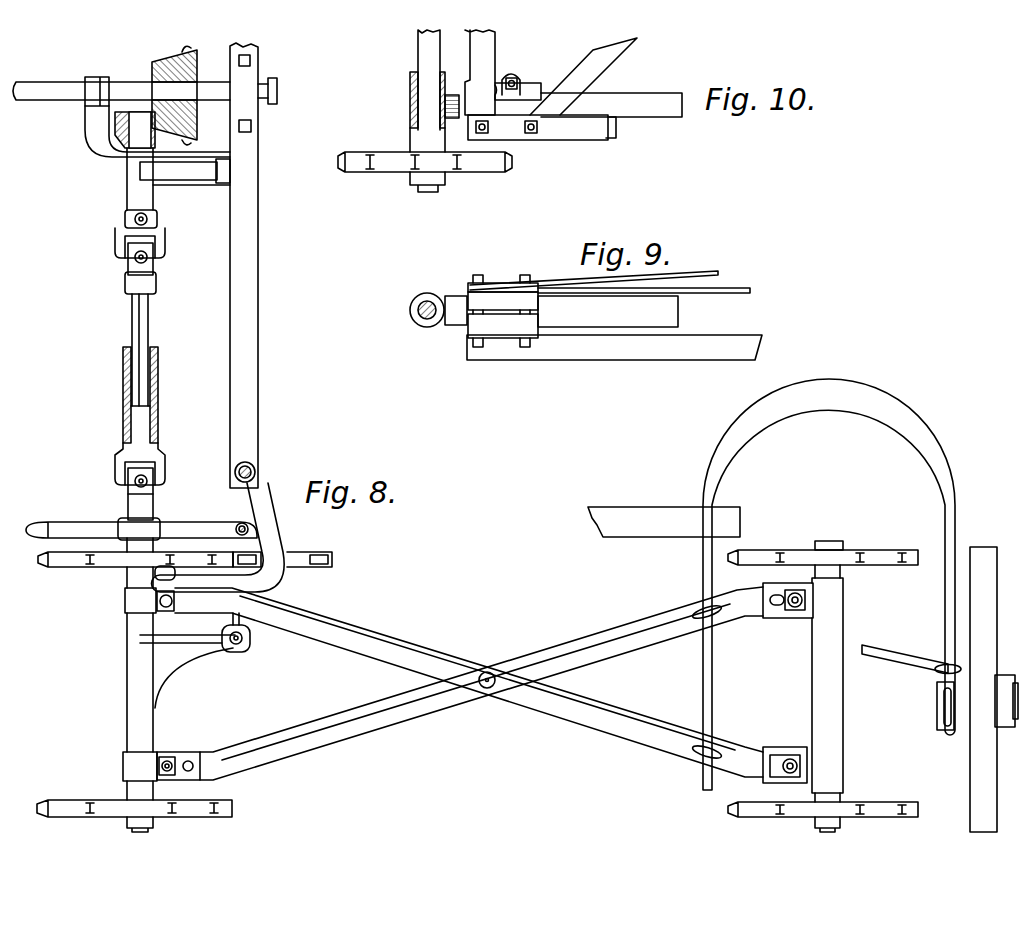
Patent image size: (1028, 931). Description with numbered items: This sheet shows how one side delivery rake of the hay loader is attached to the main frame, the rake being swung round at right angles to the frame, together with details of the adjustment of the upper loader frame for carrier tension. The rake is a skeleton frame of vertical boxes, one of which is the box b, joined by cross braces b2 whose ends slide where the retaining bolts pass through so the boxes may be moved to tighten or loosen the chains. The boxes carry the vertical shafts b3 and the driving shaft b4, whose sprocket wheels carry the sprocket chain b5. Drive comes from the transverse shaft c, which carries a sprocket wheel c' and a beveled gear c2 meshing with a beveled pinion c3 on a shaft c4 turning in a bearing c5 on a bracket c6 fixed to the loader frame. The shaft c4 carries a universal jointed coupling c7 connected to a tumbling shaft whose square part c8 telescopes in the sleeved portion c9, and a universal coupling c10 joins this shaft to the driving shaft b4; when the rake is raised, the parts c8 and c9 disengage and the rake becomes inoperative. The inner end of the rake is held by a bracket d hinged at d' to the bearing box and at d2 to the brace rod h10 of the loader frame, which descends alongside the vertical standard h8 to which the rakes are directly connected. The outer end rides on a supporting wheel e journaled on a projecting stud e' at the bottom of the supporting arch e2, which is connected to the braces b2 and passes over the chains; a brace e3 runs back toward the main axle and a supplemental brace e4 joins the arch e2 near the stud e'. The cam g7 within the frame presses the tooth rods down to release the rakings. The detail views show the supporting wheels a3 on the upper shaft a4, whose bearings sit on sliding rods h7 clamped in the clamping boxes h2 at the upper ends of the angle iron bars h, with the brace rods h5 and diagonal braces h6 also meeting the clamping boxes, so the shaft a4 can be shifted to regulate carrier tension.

In FIG. 8, the transverse shaft c is at (145, 82).
In FIG. 8, the sprocket wheel c' is at (202, 83).
In FIG. 8, the beveled gear c2 is at (158, 62).
In FIG. 8, the beveled pinion c3 is at (106, 138).
In FIG. 8, the shaft c4 is at (140, 118).
In FIG. 8, the bearing c5 is at (140, 166).
In FIG. 8, the bracket c6 is at (203, 172).
In FIG. 8, the universal jointed coupling c7 is at (150, 278).
In FIG. 8, the telescoping part c8 is at (146, 323).
In FIG. 8, the sleeved portion c9 is at (156, 381).
In FIG. 8, the universal coupling c10 is at (150, 506).
In FIG. 8, the vertical standard h8 is at (252, 294).
In FIG. 8, the brace rod h10 is at (256, 466).
In FIG. 8, the bracket d is at (243, 538).
In FIG. 8, the hinge d' is at (131, 614).
In FIG. 8, the hinge d2 is at (258, 486).
In FIG. 8, the cam g7 is at (66, 532).
In FIG. 8, the vertical box b is at (136, 676).
In FIG. 8, the cross braces b2 is at (553, 656).
In FIG. 8, the vertical shaft b3 is at (843, 571).
In FIG. 8, the driving shaft b4 is at (125, 573).
In FIG. 8, the sprocket chain b5 is at (328, 559).
In FIG. 8, the supporting wheel e is at (990, 689).
In FIG. 8, the projecting stud e' is at (964, 713).
In FIG. 8, the supporting arch e2 is at (897, 401).
In FIG. 8, the brace e3 is at (664, 522).
In FIG. 8, the supplemental brace e4 is at (880, 649).
In FIG. 10, the supporting wheel a3 is at (392, 165).
In FIG. 10, the transverse shaft a4 is at (423, 191).
In FIG. 9, the transverse shaft a4 is at (432, 305).
In FIG. 10, the angle iron bar h is at (608, 138).
In FIG. 9, the angle iron bar h is at (630, 345).
In FIG. 10, the clamping box h2 is at (525, 86).
In FIG. 9, the clamping box h2 is at (479, 322).
In FIG. 9, the brace rod h5 is at (712, 271).
In FIG. 10, the diagonal brace h6 is at (571, 157).
In FIG. 9, the diagonal brace h6 is at (740, 290).
In FIG. 10, the sliding rod h7 is at (611, 104).
In FIG. 9, the sliding rod h7 is at (608, 311).